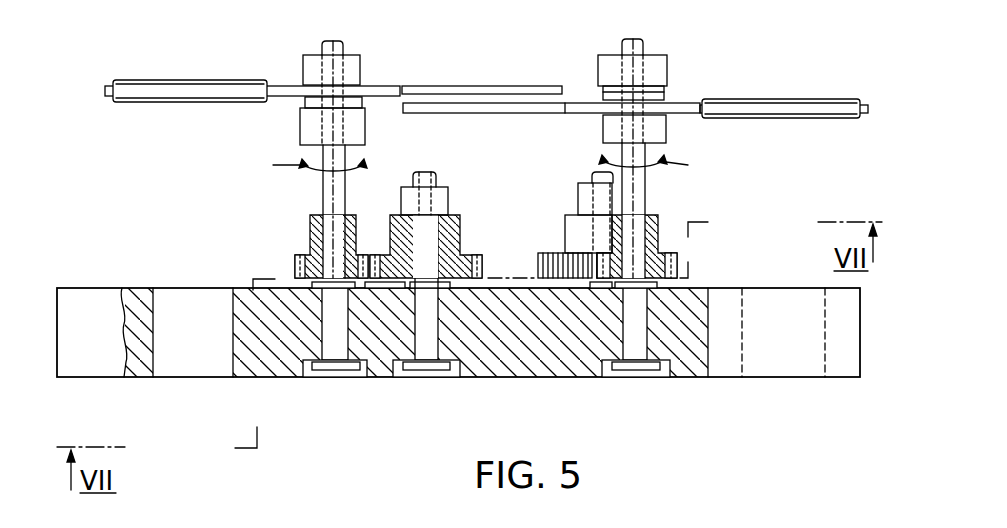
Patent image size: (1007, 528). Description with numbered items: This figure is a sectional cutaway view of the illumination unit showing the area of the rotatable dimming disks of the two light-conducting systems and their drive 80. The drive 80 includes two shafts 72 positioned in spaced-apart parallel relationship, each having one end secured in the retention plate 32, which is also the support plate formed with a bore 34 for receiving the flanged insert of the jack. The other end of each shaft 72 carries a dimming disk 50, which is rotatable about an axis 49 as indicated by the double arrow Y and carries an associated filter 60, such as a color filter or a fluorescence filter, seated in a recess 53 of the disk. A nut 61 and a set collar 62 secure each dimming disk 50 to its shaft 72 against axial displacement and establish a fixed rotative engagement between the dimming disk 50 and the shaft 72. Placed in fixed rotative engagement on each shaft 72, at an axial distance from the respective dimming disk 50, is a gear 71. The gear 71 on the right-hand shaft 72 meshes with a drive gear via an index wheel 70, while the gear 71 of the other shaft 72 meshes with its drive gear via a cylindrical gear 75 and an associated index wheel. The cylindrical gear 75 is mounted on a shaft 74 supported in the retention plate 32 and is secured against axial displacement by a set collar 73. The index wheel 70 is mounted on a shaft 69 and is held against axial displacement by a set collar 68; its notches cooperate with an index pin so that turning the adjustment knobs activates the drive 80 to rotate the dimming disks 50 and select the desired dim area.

The retention plate 32 is at (92, 313).
The bore 34 is at (176, 345).
The axis 49 is at (328, 192).
The dimming disk 50 is at (459, 80).
The recess 53 is at (287, 88).
The filter 60 is at (199, 70).
The nut 61 is at (653, 62).
The set collar 62 is at (352, 62).
The set collar 68 is at (583, 200).
The shaft 69 is at (602, 172).
The index wheel 70 is at (553, 255).
The gear 71 is at (310, 242).
The shaft 72 is at (336, 340).
The set collar 73 is at (445, 185).
The shaft 74 is at (428, 345).
The cylindrical gear 75 is at (468, 245).
The drive 80 is at (755, 186).